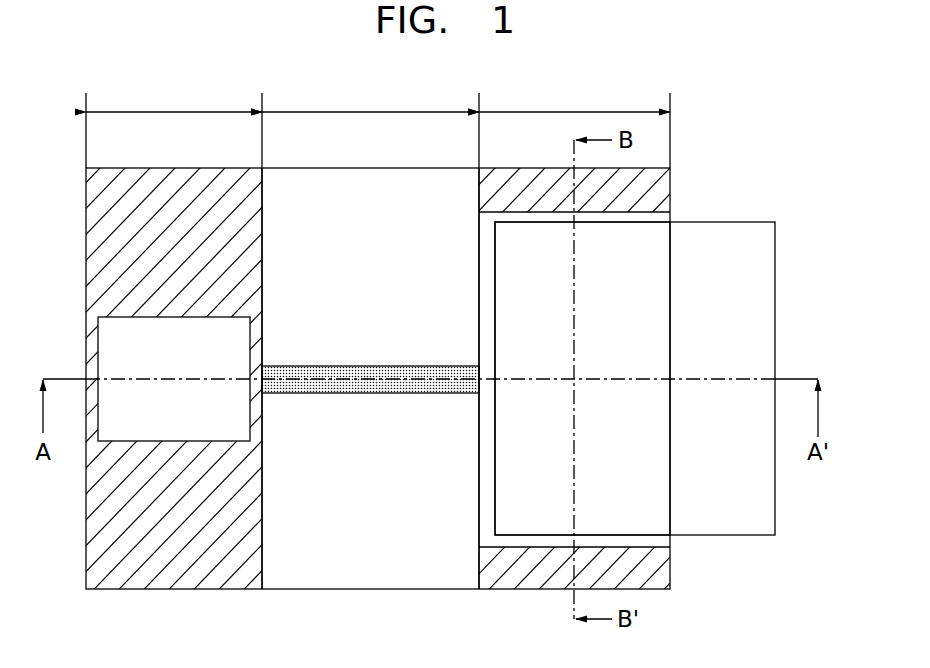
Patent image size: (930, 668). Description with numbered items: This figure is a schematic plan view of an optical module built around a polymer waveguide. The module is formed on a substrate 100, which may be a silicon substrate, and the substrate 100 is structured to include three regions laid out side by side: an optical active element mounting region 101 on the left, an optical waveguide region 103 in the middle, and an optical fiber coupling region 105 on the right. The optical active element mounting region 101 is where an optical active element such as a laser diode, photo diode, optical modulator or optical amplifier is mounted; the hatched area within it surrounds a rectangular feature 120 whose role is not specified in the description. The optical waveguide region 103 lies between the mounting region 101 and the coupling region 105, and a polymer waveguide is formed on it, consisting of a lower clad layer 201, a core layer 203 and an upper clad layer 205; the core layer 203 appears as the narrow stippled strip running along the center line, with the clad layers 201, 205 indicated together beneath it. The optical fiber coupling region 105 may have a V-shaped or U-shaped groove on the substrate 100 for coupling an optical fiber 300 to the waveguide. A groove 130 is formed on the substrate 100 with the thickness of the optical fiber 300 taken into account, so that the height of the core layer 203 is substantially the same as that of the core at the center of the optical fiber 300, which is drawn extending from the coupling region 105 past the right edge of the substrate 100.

The substrate 100 is at (658, 573).
The optical active element mounting region 101 is at (174, 128).
The optical waveguide region 103 is at (370, 128).
The optical fiber coupling region 105 is at (574, 128).
The first pattern in first region 120 is at (173, 425).
The groove 130 is at (646, 547).
The lower clad layer 201 is at (423, 566).
The core layer 203 is at (323, 387).
The upper clad layer 205 is at (423, 617).
The optical fiber 300 is at (731, 230).